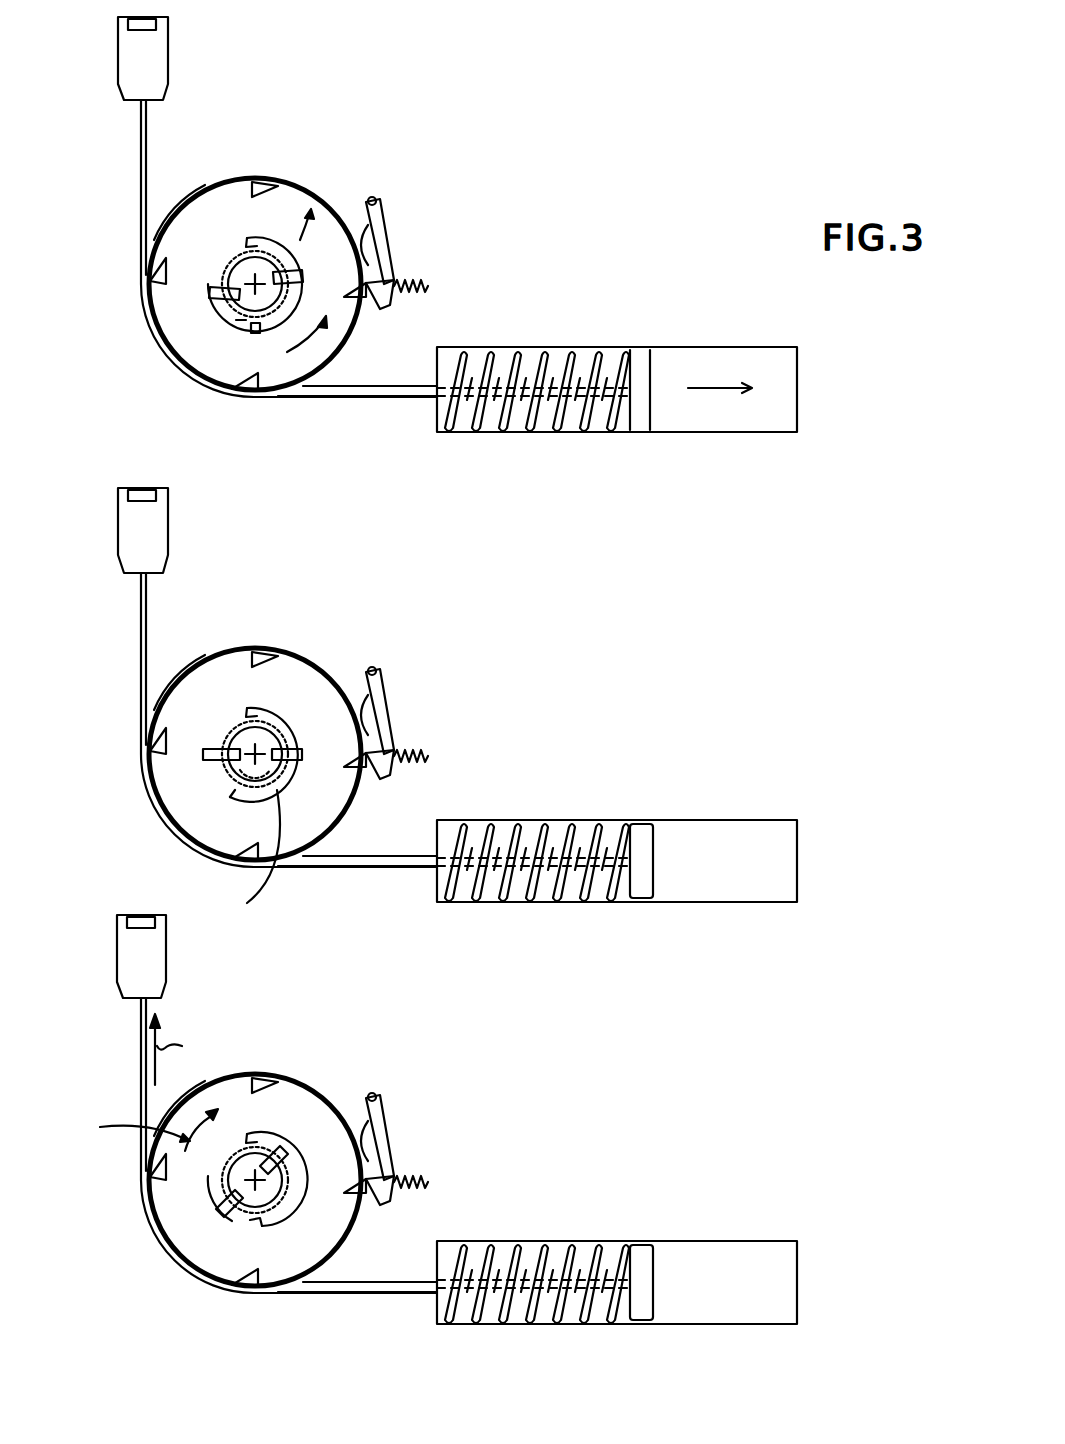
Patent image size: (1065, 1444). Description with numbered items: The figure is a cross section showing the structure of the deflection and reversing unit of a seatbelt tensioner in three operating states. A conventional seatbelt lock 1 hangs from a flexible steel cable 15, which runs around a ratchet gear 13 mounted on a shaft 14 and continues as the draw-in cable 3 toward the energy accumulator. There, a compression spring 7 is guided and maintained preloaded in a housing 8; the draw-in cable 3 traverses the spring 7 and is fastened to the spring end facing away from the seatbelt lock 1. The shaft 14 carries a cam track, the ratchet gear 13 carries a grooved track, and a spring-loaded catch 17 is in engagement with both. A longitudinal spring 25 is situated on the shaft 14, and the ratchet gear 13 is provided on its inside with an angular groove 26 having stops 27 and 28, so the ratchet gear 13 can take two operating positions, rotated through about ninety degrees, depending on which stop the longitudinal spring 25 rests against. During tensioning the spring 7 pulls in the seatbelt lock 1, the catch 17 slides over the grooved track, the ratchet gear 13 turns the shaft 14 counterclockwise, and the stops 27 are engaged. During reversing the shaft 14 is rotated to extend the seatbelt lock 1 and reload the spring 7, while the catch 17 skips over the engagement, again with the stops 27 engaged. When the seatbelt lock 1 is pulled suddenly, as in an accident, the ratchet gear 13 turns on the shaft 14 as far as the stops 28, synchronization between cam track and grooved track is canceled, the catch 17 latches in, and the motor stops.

The seatbelt lock 1 is at (172, 44).
The draw-in cable 3 is at (365, 399).
The compression spring 7 is at (552, 358).
The housing 8 is at (686, 348).
The ratchet gear 13 is at (300, 206).
The shaft 14 is at (268, 266).
The flexible steel cable 15 is at (139, 166).
The spring-loaded catch 17 is at (390, 234).
The longitudinal spring 25 is at (235, 320).
The angular groove 26 is at (238, 325).
The stop 27 is at (245, 320).
The stop 28 is at (262, 252).